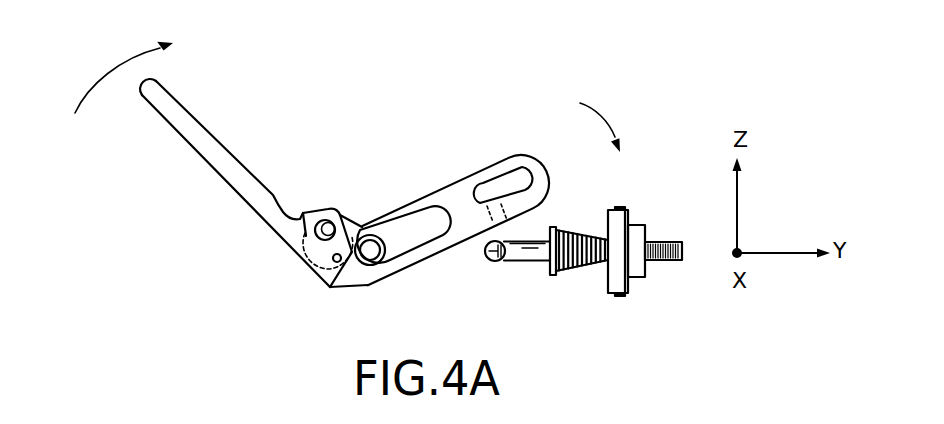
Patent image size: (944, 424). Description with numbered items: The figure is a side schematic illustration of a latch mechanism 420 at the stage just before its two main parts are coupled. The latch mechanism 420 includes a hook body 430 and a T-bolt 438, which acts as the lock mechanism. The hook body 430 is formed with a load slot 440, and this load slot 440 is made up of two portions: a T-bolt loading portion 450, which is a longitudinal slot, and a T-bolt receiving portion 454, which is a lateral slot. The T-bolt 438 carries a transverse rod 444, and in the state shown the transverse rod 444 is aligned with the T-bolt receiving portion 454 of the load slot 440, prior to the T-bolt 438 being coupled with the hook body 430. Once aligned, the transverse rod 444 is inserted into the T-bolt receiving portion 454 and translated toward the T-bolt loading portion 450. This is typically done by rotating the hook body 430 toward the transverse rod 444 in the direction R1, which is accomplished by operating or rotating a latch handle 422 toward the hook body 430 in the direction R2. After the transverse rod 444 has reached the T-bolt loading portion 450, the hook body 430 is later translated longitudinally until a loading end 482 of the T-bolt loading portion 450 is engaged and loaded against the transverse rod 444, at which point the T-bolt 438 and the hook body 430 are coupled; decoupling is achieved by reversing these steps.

The latch mechanism 420 is at (268, 62).
The latch handle 422 is at (196, 157).
The hook body 430 is at (441, 203).
The T-bolt 438 is at (495, 262).
The load slot 440 is at (507, 157).
The transverse rod 444 is at (490, 246).
The T-bolt loading portion 450 is at (490, 182).
The T-bolt receiving portion 454 is at (537, 203).
The loading end 482 is at (533, 183).
The rotation of the hook body R1 is at (603, 120).
The rotation of the latch handle R2 is at (107, 77).